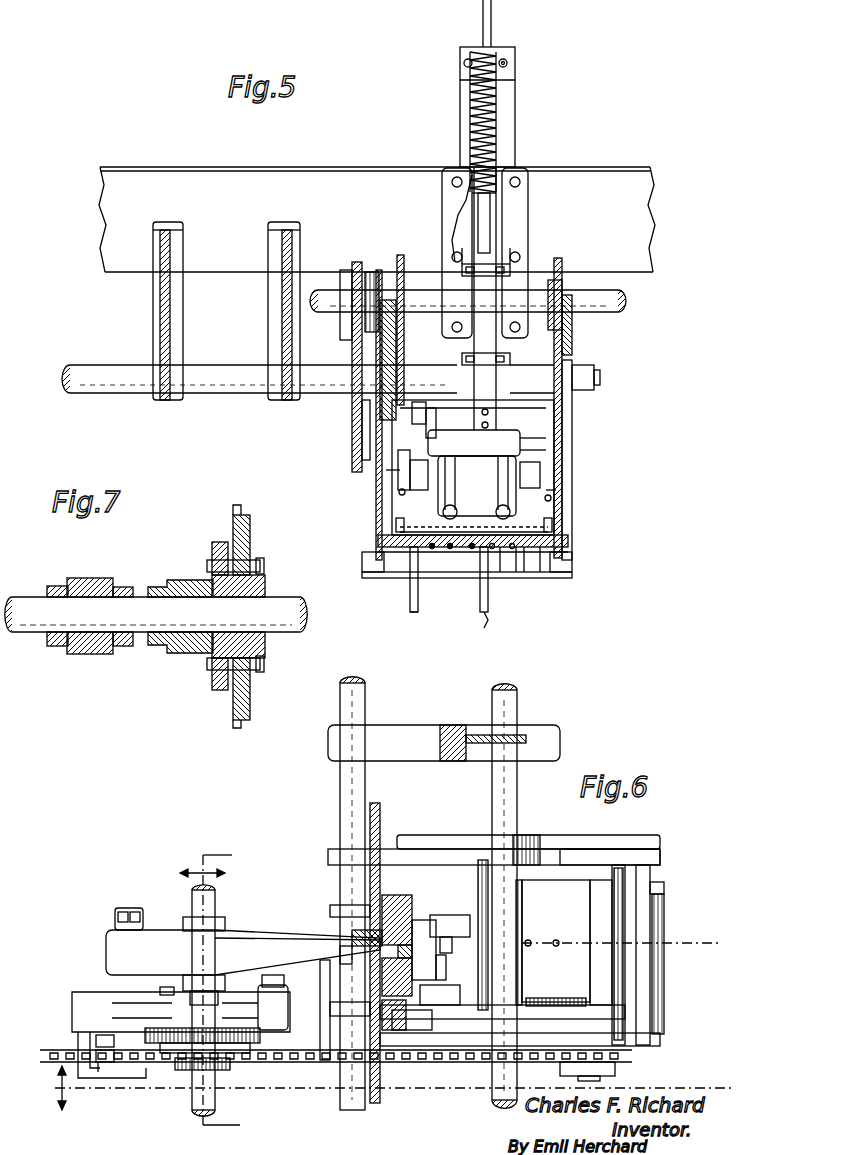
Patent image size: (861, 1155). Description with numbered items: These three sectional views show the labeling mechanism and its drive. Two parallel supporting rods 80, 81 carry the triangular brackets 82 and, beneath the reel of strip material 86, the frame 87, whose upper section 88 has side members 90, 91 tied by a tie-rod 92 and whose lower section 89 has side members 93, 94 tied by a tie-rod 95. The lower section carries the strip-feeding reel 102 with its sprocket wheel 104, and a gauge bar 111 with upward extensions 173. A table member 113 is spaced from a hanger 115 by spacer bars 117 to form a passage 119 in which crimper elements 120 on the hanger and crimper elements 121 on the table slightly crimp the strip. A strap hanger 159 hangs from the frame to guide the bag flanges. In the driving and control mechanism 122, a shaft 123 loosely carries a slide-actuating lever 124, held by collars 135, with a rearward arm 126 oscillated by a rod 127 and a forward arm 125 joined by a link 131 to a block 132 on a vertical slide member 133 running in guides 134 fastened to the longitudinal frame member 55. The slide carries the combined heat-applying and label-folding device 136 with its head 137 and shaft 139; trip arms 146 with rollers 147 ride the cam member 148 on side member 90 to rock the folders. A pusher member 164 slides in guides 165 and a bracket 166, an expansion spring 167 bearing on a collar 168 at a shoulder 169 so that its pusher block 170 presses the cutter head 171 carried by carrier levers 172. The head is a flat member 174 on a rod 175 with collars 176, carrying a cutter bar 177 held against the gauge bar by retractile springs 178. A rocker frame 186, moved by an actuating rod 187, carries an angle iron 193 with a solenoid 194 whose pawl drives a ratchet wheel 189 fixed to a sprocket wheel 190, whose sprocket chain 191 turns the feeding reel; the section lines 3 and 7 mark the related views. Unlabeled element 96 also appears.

In FIG. 6, the section line 3 is at (386, 1022).
In FIG. 6, the section line 7 is at (219, 994).
In FIG. 5, the longitudinal frame member 55 is at (250, 185).
In FIG. 6, the longitudinal frame member 55 is at (380, 813).
In FIG. 5, the supporting rod 80 is at (242, 388).
In FIG. 6, the supporting rod 80 is at (365, 703).
In FIG. 6, the supporting rod 81 is at (500, 784).
In FIG. 5, the triangular bracket 82 is at (272, 285).
In FIG. 6, the triangular bracket 82 is at (428, 730).
In FIG. 6, the strip of material 86 is at (664, 913).
In FIG. 5, the frame 87 is at (574, 410).
In FIG. 6, the frame 87 is at (555, 850).
In FIG. 5, the upper frame section 88 is at (573, 335).
In FIG. 6, the upper frame section 88 is at (452, 860).
In FIG. 5, the lower frame section 89 is at (568, 480).
In FIG. 6, the lower frame section 89 is at (620, 845).
In FIG. 5, the side member 90 is at (403, 255).
In FIG. 6, the side member 90 is at (455, 1022).
In FIG. 5, the side member 91 is at (562, 262).
In FIG. 6, the side member 91 is at (410, 852).
In FIG. 6, the tie-rod 92 is at (604, 975).
In FIG. 5, the side member 93 is at (376, 415).
In FIG. 6, the side member 93 is at (488, 1040).
In FIG. 5, the side member 94 is at (568, 505).
In FIG. 6, the side member 94 is at (528, 845).
In FIG. 6, the tie-rod 95 is at (648, 965).
In FIG. 6, the plate 96 is at (470, 880).
In FIG. 6, the strip-feeding reel 102 is at (664, 885).
In FIG. 6, the sprocket wheel 104 is at (632, 1058).
In FIG. 5, the gauge bar 111 is at (516, 578).
In FIG. 5, the table member 113 is at (445, 555).
In FIG. 5, the hanger 115 is at (546, 559).
In FIG. 5, the spacer bar 117 is at (380, 545).
In FIG. 5, the passage 119 is at (500, 578).
In FIG. 5, the crimper element 120 is at (460, 532).
In FIG. 5, the crimper element 121 is at (482, 568).
In FIG. 5, the driving and control mechanism 122 is at (344, 330).
In FIG. 7, the driving and control mechanism 122 is at (193, 660).
In FIG. 6, the driving and control mechanism 122 is at (168, 1068).
In FIG. 5, the shaft 123 is at (586, 303).
In FIG. 7, the shaft 123 is at (278, 602).
In FIG. 6, the shaft 123 is at (215, 903).
In FIG. 7, the slide-actuating lever 124 is at (120, 568).
In FIG. 6, the slide-actuating lever 124 is at (180, 930).
In FIG. 6, the arm 125 is at (278, 940).
In FIG. 6, the arm 126 is at (160, 950).
In FIG. 5, the rod 127 is at (490, 606).
In FIG. 6, the rod 127 is at (117, 924).
In FIG. 6, the link 131 is at (345, 965).
In FIG. 6, the block 132 is at (360, 930).
In FIG. 5, the slide member 133 is at (505, 147).
In FIG. 6, the slide member 133 is at (398, 895).
In FIG. 5, the guide 134 is at (460, 203).
In FIG. 6, the guide 134 is at (360, 905).
In FIG. 7, the collar 135 is at (52, 585).
In FIG. 6, the collar 135 is at (218, 975).
In FIG. 5, the combined heat-applying and label-folding device 136 is at (540, 465).
In FIG. 6, the head 137 is at (470, 930).
In FIG. 5, the shaft 139 is at (400, 478).
In FIG. 5, the trip arm 146 is at (442, 418).
In FIG. 6, the trip arm 146 is at (470, 990).
In FIG. 5, the roller 147 is at (410, 417).
In FIG. 6, the roller 147 is at (405, 1030).
In FIG. 6, the cam member 148 is at (395, 1030).
In FIG. 5, the strap hanger 159 is at (375, 560).
In FIG. 5, the pusher member 164 is at (497, 208).
In FIG. 6, the pusher member 164 is at (470, 942).
In FIG. 5, the guide 165 is at (485, 278).
In FIG. 6, the guide 165 is at (465, 968).
In FIG. 5, the bracket 166 is at (463, 50).
In FIG. 5, the expansion spring 167 is at (472, 125).
In FIG. 5, the collar 168 is at (475, 193).
In FIG. 5, the shoulder 169 is at (470, 210).
In FIG. 5, the pusher block 170 is at (497, 420).
In FIG. 5, the cutter head 171 is at (477, 487).
In FIG. 5, the carrier lever 172 is at (395, 472).
In FIG. 5, the upward extension 173 is at (580, 530).
In FIG. 5, the flat member 174 is at (425, 480).
In FIG. 5, the rod 175 is at (535, 445).
In FIG. 5, the collar 176 is at (433, 442).
In FIG. 5, the cutter bar 177 is at (512, 559).
In FIG. 5, the retractile spring 178 is at (400, 512).
In FIG. 7, the rocker frame 186 is at (185, 580).
In FIG. 6, the rocker frame 186 is at (105, 1000).
In FIG. 5, the actuating rod 187 is at (396, 600).
In FIG. 6, the actuating rod 187 is at (290, 985).
In FIG. 5, the ratchet wheel 189 is at (370, 275).
In FIG. 7, the ratchet wheel 189 is at (215, 540).
In FIG. 6, the ratchet wheel 189 is at (270, 1062).
In FIG. 5, the sprocket wheel 190 is at (352, 285).
In FIG. 7, the sprocket wheel 190 is at (250, 548).
In FIG. 6, the sprocket wheel 190 is at (128, 1048).
In FIG. 5, the sprocket chain 191 is at (362, 448).
In FIG. 6, the sprocket chain 191 is at (333, 1060).
In FIG. 6, the angle iron 193 is at (78, 1050).
In FIG. 6, the solenoid 194 is at (100, 1072).